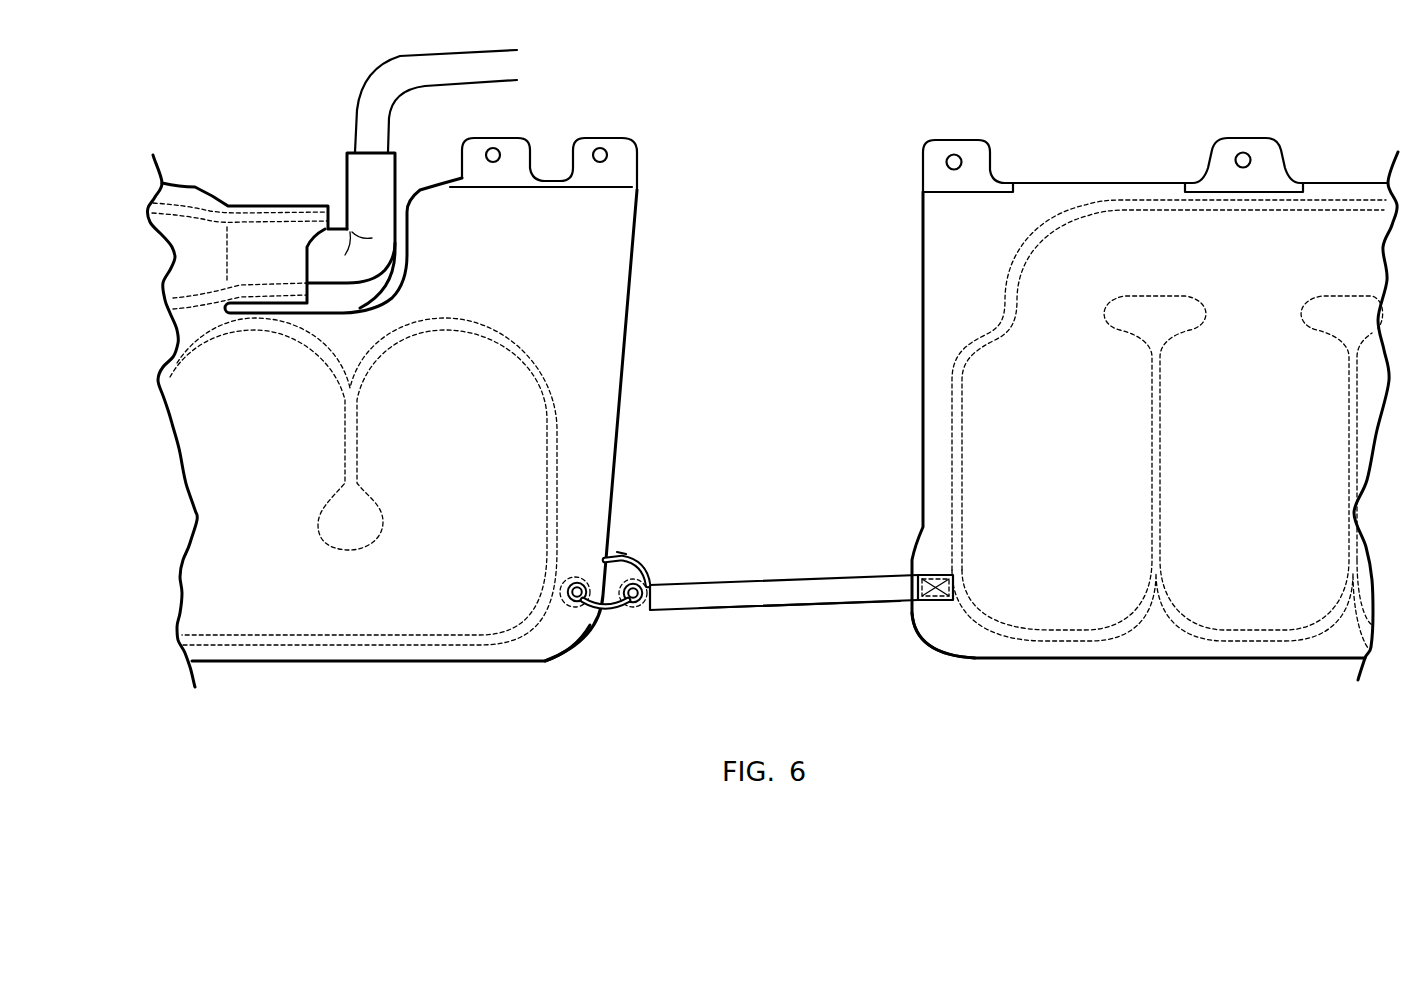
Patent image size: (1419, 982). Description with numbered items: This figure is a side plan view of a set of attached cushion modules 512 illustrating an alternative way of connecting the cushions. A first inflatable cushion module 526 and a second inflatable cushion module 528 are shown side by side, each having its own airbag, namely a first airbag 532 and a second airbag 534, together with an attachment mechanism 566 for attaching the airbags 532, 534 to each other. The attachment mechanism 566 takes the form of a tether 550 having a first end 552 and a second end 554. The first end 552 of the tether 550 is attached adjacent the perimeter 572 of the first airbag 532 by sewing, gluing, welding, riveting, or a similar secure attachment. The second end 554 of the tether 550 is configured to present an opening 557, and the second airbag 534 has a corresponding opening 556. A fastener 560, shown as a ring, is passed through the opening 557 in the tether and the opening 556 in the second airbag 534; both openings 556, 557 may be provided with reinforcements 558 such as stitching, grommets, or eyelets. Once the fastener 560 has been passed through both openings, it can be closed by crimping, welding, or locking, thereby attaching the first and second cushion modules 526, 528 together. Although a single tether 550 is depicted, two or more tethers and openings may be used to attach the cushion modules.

The set of attached cushion modules 512 is at (818, 142).
The first inflatable cushion module 526 is at (1338, 172).
The second inflatable cushion module 528 is at (663, 192).
The first airbag 532 is at (955, 298).
The second airbag 534 is at (592, 322).
The tether 550 is at (780, 582).
The first end of the tether 552 is at (938, 576).
The second end of the tether 554 is at (687, 590).
The opening in the second airbag 556 is at (588, 580).
The opening in the tether second end 557 is at (633, 607).
The reinforcements 558 is at (640, 612).
The fastener 560 is at (605, 643).
The attachment mechanism 566 is at (822, 624).
The perimeter of the first airbag 572 is at (935, 630).